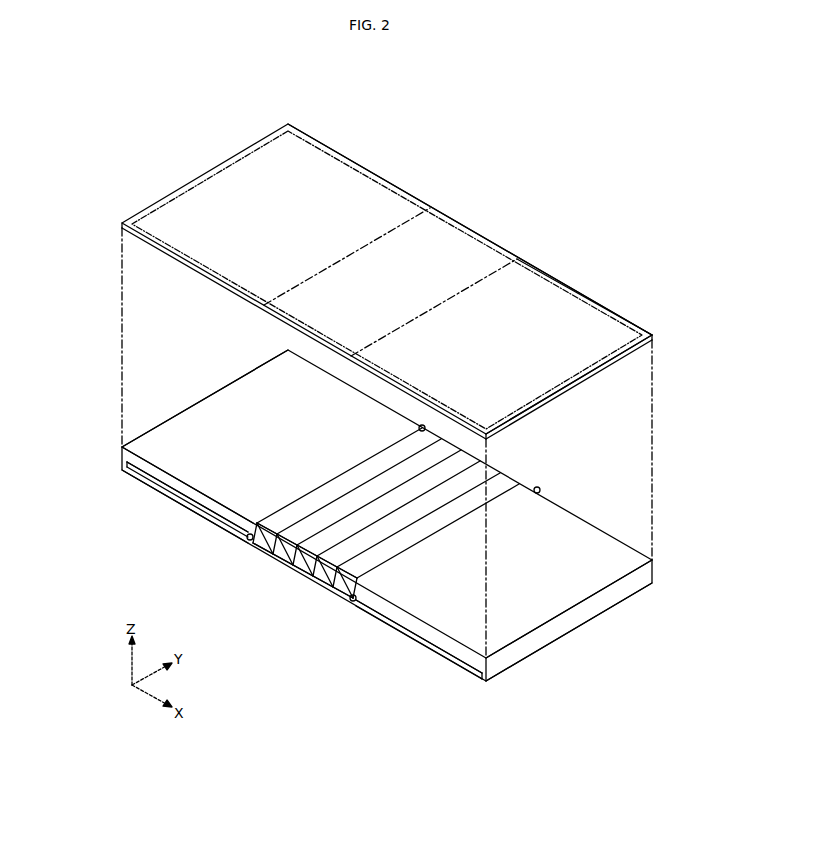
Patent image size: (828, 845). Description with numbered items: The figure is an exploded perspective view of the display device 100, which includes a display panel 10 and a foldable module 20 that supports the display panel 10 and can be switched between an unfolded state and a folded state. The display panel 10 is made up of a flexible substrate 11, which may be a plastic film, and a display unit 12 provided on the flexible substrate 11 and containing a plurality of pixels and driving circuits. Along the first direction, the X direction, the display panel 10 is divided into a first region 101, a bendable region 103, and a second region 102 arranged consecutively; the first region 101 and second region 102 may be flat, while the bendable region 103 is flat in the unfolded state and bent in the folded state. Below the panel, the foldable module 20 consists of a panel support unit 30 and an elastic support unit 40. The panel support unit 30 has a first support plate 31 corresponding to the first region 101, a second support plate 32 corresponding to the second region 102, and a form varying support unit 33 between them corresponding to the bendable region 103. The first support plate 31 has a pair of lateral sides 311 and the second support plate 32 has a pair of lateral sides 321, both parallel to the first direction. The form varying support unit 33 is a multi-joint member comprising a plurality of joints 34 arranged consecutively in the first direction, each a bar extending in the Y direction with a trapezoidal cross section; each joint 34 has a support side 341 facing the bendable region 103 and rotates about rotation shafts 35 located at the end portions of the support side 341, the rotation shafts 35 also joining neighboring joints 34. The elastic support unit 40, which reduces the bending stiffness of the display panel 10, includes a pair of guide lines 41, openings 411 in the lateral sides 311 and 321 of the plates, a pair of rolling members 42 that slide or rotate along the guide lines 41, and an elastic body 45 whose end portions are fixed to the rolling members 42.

The display device 100 is at (408, 88).
The display panel 10 is at (558, 274).
The flexible substrate 11 is at (568, 388).
The display unit 12 is at (467, 226).
The first region 101 is at (283, 216).
The second region 102 is at (511, 348).
The bendable region 103 is at (397, 280).
The foldable module 20 is at (600, 614).
The panel support unit 30 is at (522, 779).
The first support plate 31 is at (203, 396).
The sides 311 is at (143, 485).
The second support plate 32 is at (543, 640).
The sides 321 is at (435, 648).
The form varying support unit 33 is at (272, 551).
The joints 34 is at (320, 556).
The support side 341 is at (357, 497).
The rotation shafts 35 is at (280, 537).
The elastic support unit 40 is at (612, 779).
The guide lines 41 is at (187, 497).
The rail strip 411 is at (193, 512).
The rolling members 42 is at (242, 539).
The elastic body 45 is at (300, 563).